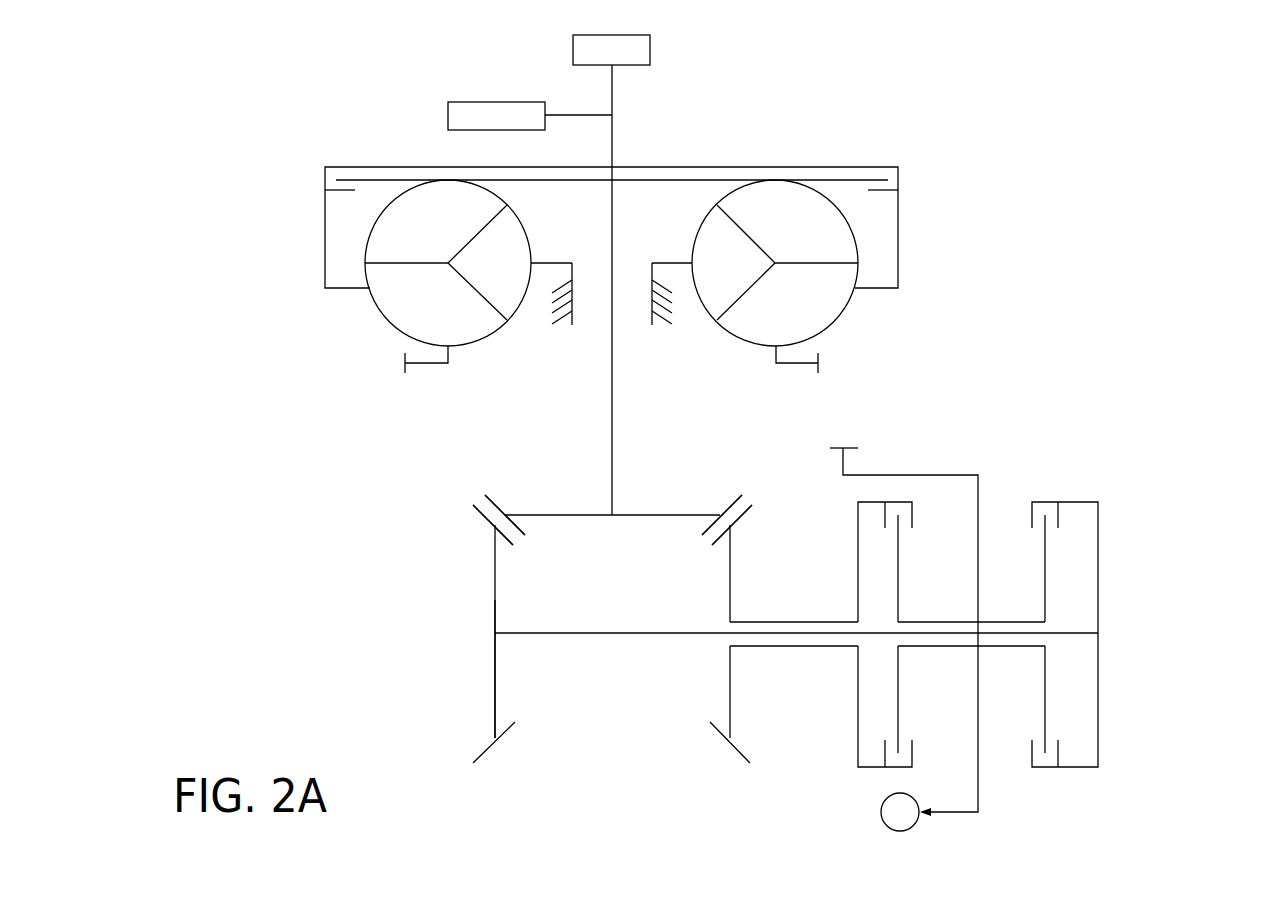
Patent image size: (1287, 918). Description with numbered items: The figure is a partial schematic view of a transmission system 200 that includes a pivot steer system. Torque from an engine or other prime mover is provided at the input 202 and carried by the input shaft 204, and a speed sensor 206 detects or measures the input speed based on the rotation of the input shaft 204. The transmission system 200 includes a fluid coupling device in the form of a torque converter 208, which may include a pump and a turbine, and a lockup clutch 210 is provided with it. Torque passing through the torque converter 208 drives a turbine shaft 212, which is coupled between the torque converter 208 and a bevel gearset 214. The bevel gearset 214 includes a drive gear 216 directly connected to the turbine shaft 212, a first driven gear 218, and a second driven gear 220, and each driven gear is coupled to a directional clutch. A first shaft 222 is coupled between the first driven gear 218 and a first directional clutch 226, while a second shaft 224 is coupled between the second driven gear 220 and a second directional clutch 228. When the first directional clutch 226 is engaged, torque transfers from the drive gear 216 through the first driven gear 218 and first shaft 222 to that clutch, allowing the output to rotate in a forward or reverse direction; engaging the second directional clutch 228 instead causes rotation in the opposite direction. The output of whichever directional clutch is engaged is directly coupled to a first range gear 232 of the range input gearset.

The transmission system 200 is at (1198, 163).
The input 202 is at (650, 50).
The input shaft 204 is at (612, 85).
The speed sensor 206 is at (473, 100).
The torque converter 208 is at (299, 206).
The lockup clutch 210 is at (914, 176).
The turbine shaft 212 is at (612, 388).
The bevel gearset 214 is at (472, 575).
The drive gear 216 is at (547, 513).
The first driven gear 218 is at (731, 555).
The second driven gear 220 is at (493, 614).
The first shaft 222 is at (797, 620).
The second shaft 224 is at (590, 640).
The first directional clutch 226 is at (840, 508).
The second directional clutch 228 is at (1114, 521).
The first range gear 232 is at (978, 793).